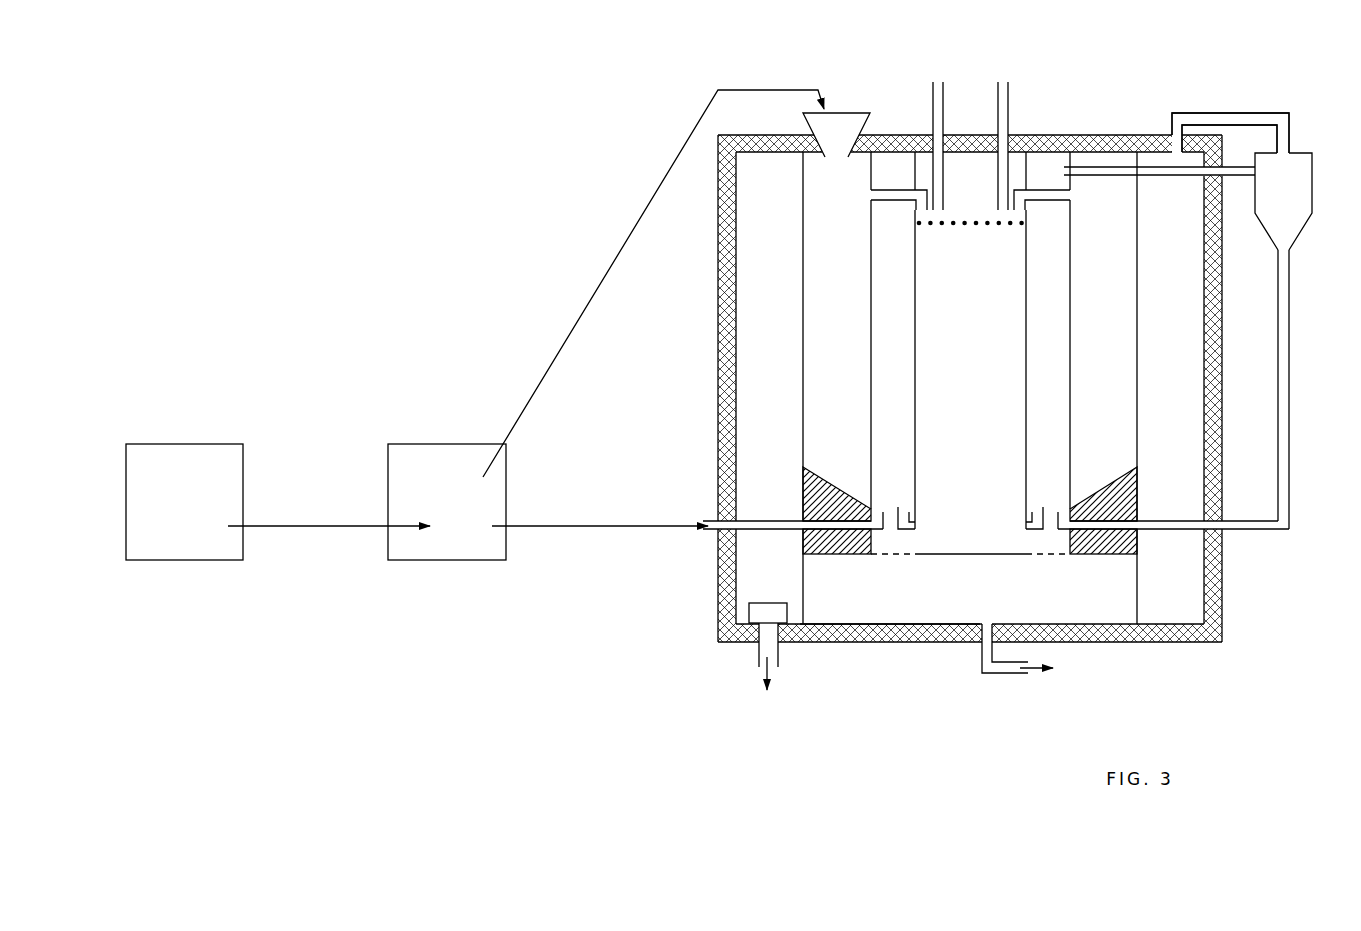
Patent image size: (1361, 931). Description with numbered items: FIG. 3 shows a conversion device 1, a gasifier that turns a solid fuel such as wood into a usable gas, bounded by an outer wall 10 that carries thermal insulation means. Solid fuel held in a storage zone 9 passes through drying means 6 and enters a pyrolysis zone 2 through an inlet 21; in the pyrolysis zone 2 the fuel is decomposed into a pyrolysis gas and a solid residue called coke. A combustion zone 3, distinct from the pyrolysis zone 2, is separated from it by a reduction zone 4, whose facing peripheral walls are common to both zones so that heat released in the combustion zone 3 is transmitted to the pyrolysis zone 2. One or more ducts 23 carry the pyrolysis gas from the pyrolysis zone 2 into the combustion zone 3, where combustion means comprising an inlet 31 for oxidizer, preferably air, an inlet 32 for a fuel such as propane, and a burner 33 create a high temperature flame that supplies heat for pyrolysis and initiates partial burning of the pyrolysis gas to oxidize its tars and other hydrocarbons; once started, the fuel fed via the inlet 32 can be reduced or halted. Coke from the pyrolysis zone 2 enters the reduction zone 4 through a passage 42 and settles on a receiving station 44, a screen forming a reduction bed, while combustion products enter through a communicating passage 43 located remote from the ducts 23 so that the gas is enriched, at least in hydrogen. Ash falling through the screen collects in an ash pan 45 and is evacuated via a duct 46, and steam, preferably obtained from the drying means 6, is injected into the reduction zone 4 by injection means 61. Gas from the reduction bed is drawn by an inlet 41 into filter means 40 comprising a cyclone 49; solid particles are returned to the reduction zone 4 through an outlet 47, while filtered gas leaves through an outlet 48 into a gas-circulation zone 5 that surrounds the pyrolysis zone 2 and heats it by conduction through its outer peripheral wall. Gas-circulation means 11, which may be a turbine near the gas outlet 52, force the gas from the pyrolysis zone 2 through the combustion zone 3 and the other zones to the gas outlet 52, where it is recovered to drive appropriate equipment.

The furnace apparatus 1 is at (1125, 133).
The pyrolysis zone 2 is at (830, 367).
The combustion zone 3 is at (964, 367).
The reduction zone 4 is at (887, 367).
The gas-circulation zone 5 is at (762, 367).
The drying means 6 is at (441, 511).
The storage zone 9 is at (178, 511).
The outer wall 10 is at (1222, 586).
The gas-circulation means 11 is at (780, 605).
The inlet for solid fuel 21 is at (853, 112).
The duct 23 is at (891, 195).
The inlet for oxidizer 31 is at (940, 133).
The inlet for fuel 32 is at (1003, 133).
The burner 33 is at (969, 236).
The filter means 40 is at (1313, 190).
The inlet for gas 41 is at (1100, 172).
The passage 42 is at (863, 503).
The communicating passage 43 is at (1040, 510).
The receiving station 44 is at (891, 558).
The ash pan 45 is at (917, 623).
The duct 46 is at (1006, 675).
The outlet for re-injecting solid particles 47 is at (1145, 529).
The outlet for filtered gas 48 is at (1230, 120).
The cyclone 49 is at (1288, 218).
The gas outlet 52 is at (763, 648).
The means for injecting steam 61 is at (793, 529).